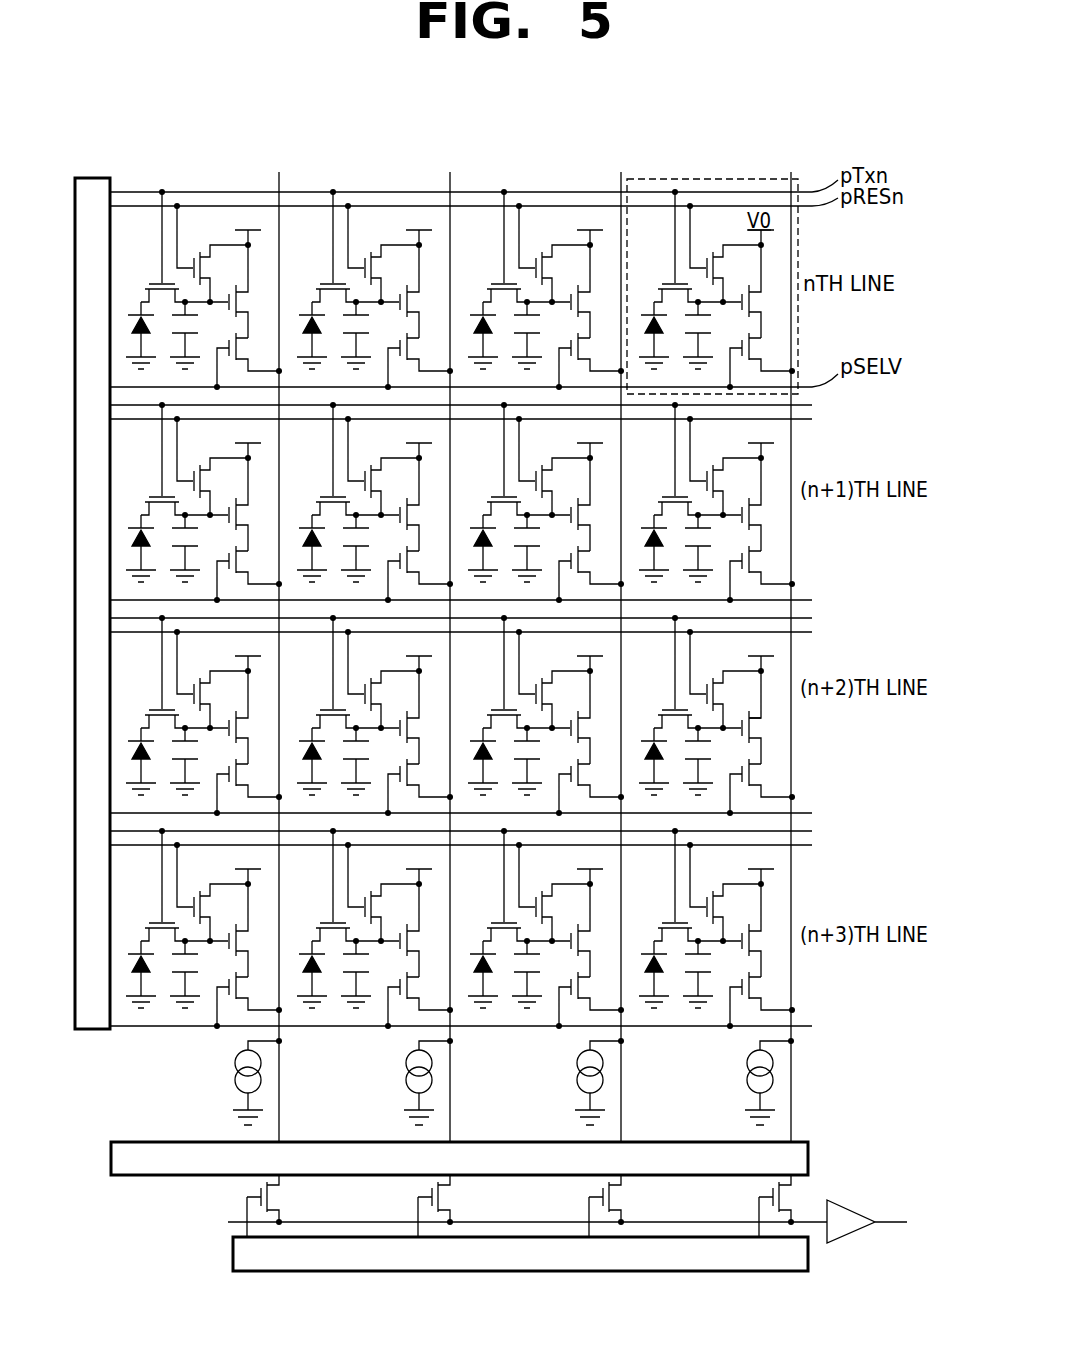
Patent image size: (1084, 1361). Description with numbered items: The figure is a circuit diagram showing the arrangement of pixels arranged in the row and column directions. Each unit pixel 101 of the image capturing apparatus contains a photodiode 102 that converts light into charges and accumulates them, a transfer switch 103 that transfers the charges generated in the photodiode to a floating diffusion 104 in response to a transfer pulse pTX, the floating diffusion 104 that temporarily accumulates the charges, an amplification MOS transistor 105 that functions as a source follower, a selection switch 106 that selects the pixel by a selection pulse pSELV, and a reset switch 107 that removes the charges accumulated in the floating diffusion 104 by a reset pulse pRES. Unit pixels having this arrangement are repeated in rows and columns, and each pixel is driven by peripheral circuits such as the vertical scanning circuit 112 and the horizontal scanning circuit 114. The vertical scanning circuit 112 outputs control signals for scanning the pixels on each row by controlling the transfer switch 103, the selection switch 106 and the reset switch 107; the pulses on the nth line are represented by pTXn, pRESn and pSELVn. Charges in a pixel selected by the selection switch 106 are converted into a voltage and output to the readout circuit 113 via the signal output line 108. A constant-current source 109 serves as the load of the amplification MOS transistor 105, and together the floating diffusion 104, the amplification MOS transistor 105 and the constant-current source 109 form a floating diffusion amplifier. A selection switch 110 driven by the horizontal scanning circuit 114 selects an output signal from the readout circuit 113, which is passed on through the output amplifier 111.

The unit pixel 101 is at (731, 178).
The photodiode 102 is at (617, 258).
The transfer switch 103 is at (683, 221).
The floating diffusion 104 is at (770, 548).
The amplification MOS transistor 105 is at (799, 737).
The selection switch 106 is at (793, 786).
The reset switch 107 is at (774, 254).
The signal output line 108 is at (793, 441).
The constant-current source 109 is at (747, 1073).
The selection switch 110 is at (790, 1197).
The output amplifier 111 is at (851, 1235).
The vertical scanning circuit 112 is at (96, 177).
The readout circuit 113 is at (809, 1151).
The horizontal scanning circuit 114 is at (790, 1272).